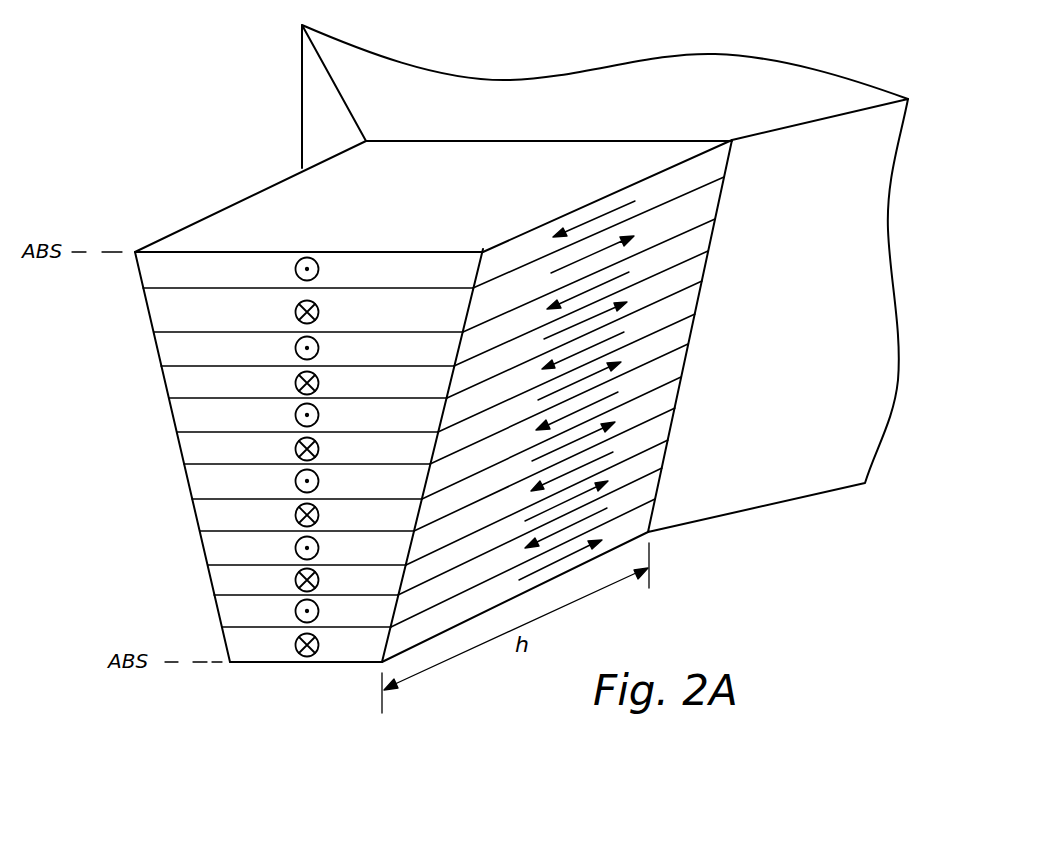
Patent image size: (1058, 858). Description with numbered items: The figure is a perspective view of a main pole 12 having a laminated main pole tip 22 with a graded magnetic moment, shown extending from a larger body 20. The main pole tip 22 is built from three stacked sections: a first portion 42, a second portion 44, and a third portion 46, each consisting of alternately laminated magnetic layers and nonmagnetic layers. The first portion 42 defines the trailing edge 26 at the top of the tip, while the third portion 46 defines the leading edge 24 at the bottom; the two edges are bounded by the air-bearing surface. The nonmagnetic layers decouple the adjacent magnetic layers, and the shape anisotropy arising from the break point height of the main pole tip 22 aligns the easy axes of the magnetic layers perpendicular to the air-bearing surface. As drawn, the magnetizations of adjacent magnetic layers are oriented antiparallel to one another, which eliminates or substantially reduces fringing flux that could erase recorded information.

The slider head 12 is at (273, 146).
The substrate 20 is at (802, 347).
The main pole tip 22 is at (277, 210).
The leading edge 24 is at (312, 664).
The trailing edge 26 is at (373, 250).
The first portion 42 is at (130, 256).
The second portion 44 is at (160, 402).
The third portion 46 is at (190, 534).